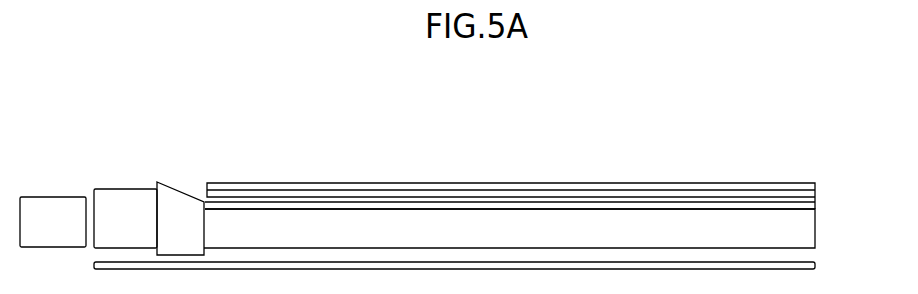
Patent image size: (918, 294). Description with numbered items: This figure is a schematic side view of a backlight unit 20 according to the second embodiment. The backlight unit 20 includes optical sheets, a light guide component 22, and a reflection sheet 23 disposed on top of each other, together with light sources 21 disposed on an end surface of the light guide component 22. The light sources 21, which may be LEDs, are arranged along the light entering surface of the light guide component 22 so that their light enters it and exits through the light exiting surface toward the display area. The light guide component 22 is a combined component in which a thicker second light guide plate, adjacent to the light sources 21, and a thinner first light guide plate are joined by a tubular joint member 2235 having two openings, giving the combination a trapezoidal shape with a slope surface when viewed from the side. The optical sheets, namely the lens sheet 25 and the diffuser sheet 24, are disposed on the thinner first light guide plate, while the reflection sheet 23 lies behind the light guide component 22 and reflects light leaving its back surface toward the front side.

The backlight unit 20 is at (468, 152).
The light sources 21 is at (55, 222).
The light guide component 22 is at (800, 229).
The reflection sheet 23 is at (800, 265).
The diffuser sheet 24 is at (800, 201).
The lens sheet 25 is at (785, 190).
The joint member 2235 is at (175, 208).